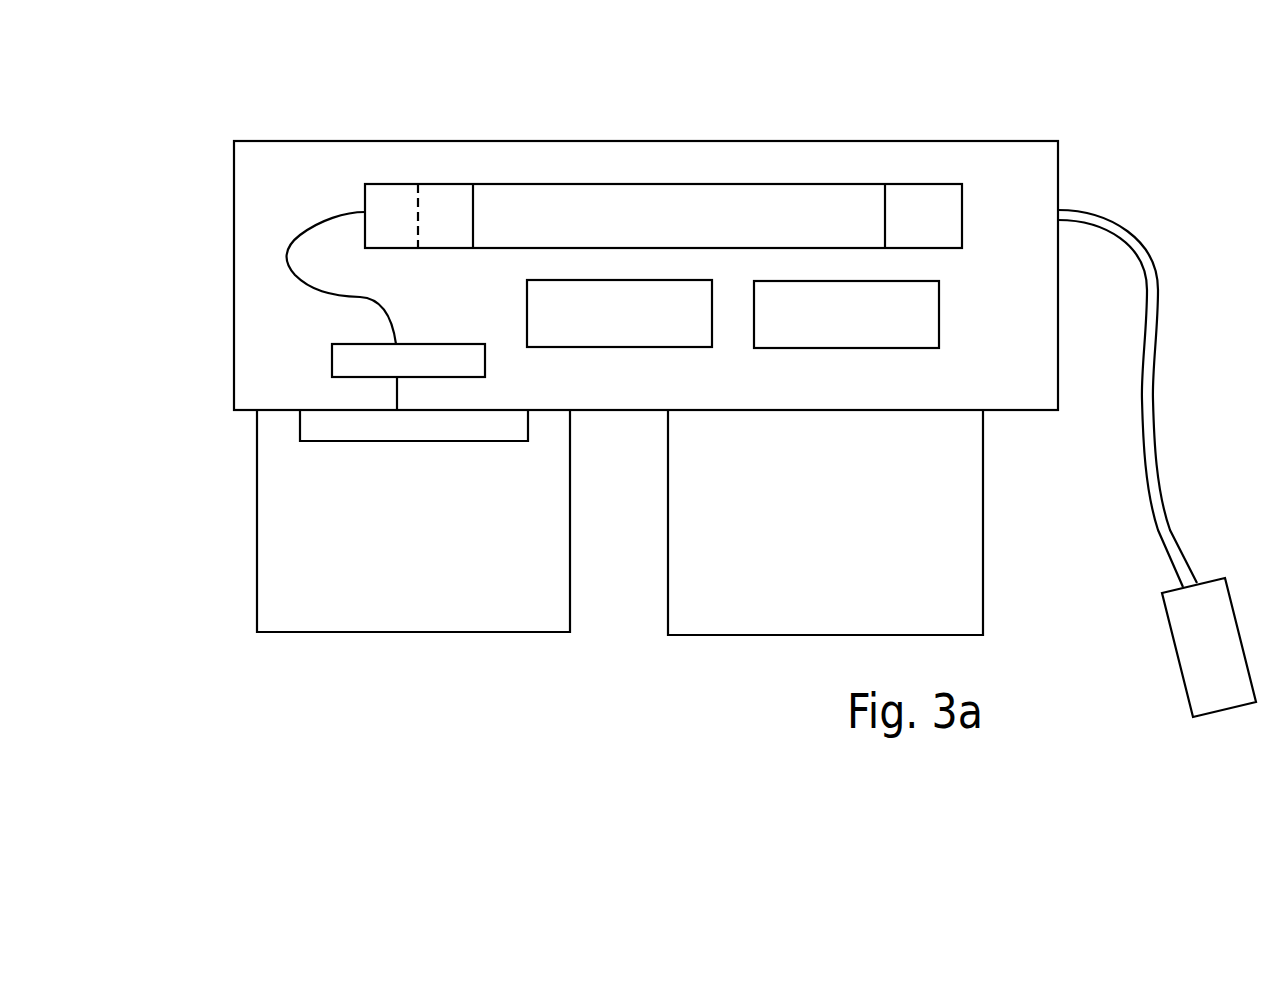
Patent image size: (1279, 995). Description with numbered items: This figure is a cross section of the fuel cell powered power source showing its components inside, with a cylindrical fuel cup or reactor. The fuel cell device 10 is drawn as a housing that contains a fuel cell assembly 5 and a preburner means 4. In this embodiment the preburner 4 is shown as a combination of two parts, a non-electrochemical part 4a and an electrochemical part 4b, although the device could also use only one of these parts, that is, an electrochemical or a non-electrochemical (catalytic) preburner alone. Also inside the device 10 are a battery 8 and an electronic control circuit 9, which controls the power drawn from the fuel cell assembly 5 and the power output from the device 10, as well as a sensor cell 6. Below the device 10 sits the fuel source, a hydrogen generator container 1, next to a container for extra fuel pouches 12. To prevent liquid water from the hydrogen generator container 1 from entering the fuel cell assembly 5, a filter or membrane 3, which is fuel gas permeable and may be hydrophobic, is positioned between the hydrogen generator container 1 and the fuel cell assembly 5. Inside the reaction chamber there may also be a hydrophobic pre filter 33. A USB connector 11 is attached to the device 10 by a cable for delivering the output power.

The hydrogen generator container 1 is at (397, 620).
The filter or membrane 3 is at (353, 363).
The preburner means 4 is at (402, 163).
The non-electrochemical part 4a is at (397, 205).
The electrochemical part 4b is at (442, 109).
The fuel cell assembly 5 is at (667, 207).
The sensor cell 6 is at (917, 197).
The battery 8 is at (582, 313).
The electronic control circuit 9 is at (831, 303).
The fuel cell device 10 is at (235, 185).
The USB connector 11 is at (1188, 680).
The container for extra fuel pouches 12 is at (745, 602).
The hydrophobic pre filter 33 is at (343, 428).